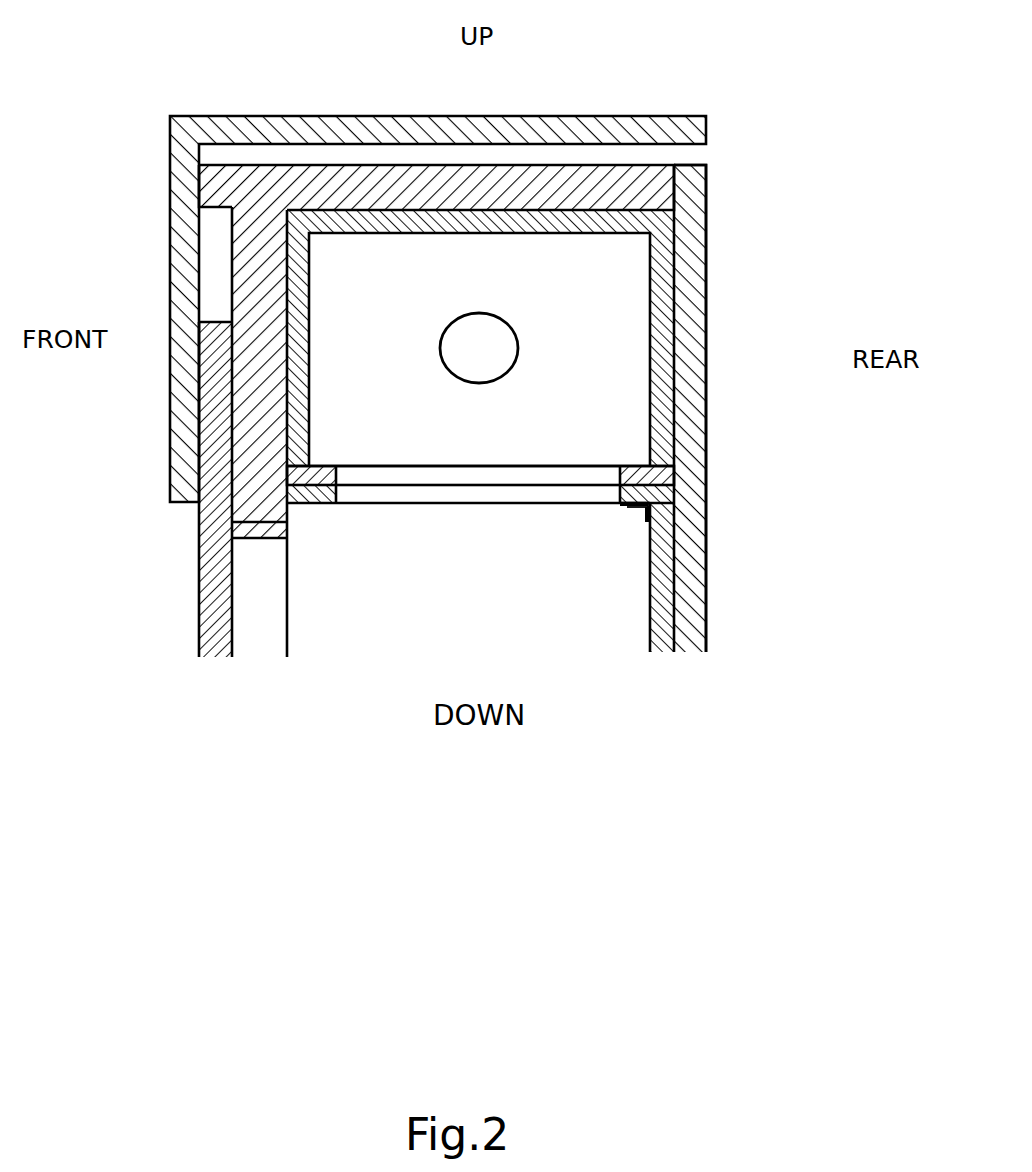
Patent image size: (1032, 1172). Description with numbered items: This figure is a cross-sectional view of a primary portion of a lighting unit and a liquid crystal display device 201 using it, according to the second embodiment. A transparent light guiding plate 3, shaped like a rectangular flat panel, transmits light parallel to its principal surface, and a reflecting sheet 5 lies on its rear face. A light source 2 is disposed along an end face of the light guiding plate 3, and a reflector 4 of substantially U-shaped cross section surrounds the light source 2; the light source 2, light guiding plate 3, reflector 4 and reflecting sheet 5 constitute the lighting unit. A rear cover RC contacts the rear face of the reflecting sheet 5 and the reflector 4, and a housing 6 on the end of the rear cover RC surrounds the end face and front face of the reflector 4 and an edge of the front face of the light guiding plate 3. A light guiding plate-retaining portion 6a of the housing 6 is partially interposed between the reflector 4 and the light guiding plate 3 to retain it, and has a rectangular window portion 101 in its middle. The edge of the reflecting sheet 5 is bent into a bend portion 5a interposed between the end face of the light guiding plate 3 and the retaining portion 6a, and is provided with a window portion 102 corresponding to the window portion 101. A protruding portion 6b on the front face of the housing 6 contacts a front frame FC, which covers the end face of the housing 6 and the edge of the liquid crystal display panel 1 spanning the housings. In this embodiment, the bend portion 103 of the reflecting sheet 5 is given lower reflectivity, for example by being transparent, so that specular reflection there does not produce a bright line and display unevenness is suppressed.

The liquid crystal display device 201 is at (692, 80).
The front frame FC is at (178, 145).
The rear cover RC is at (706, 505).
The liquid crystal display panel 1 is at (205, 594).
The light source 2 is at (505, 345).
The light guiding plate 3 is at (627, 613).
The reflector 4 is at (672, 440).
The reflecting sheet 5 is at (662, 603).
The bend portion 5a is at (307, 503).
The housing 6 is at (255, 256).
The light guiding plate-retaining portion 6a is at (706, 485).
The protruding portion 6b is at (213, 185).
The window portion 101 is at (620, 470).
The window portion 102 is at (620, 505).
The bend portion 103 is at (648, 509).